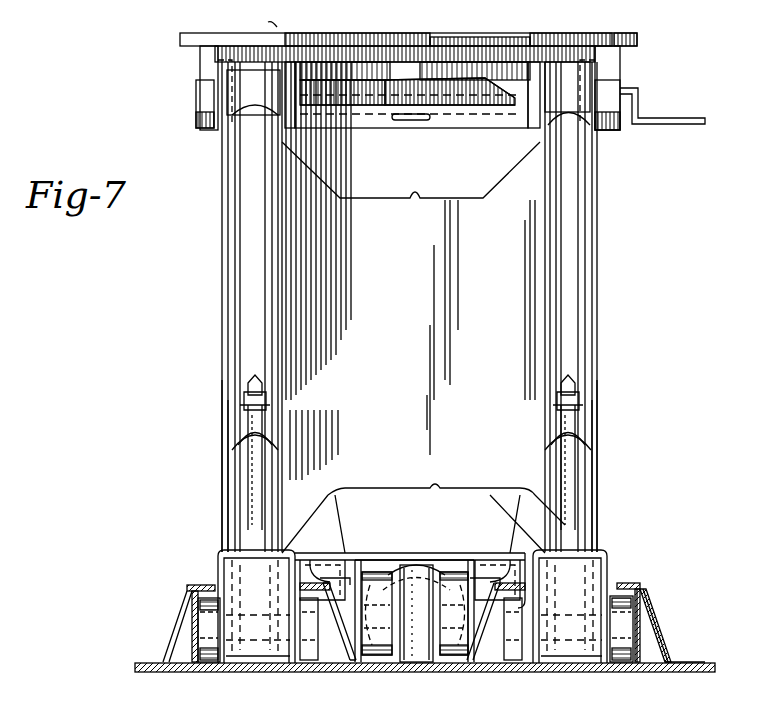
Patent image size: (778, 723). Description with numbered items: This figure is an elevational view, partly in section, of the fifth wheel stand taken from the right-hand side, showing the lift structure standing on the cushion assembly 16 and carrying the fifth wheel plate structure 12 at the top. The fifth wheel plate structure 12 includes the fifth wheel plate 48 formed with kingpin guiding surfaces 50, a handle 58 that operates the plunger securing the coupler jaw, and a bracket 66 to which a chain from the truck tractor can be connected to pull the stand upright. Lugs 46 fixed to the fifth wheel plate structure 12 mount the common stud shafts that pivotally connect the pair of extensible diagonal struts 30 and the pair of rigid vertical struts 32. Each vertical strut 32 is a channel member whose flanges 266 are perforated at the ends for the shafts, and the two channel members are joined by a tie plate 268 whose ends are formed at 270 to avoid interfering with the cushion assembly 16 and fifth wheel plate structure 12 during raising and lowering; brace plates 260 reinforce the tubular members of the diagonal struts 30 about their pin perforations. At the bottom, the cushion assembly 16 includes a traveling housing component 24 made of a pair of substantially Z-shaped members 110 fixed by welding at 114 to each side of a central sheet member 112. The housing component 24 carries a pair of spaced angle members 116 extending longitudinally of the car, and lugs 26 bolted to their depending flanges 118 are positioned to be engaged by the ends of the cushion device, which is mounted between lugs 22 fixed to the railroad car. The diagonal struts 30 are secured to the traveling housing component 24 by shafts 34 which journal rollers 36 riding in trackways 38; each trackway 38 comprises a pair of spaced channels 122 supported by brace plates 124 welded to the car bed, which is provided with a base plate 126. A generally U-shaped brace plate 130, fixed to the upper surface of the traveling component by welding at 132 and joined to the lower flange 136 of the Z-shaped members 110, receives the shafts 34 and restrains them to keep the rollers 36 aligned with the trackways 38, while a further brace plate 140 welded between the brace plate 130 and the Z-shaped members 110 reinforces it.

The fifth wheel plate structure 12 is at (273, 31).
The cushion assembly 16 is at (381, 548).
The lugs 22 is at (425, 574).
The traveling housing component 24 is at (421, 550).
The lugs 26 is at (373, 563).
The diagonal struts 30 is at (264, 324).
The vertical struts 32 is at (216, 477).
The shafts 34 is at (195, 624).
The rollers 36 is at (208, 655).
The trackways 38 is at (241, 675).
The lugs 46 is at (200, 92).
The fifth wheel plate 48 is at (538, 35).
The kingpin guiding surfaces 50 is at (325, 36).
The handle 58 is at (672, 120).
The bracket 66 is at (412, 121).
The Z-shaped members 110 is at (322, 515).
The central sheet member 112 is at (408, 553).
The welding 114 is at (332, 510).
The angle members 116 is at (348, 570).
The depending flanges 118 is at (470, 578).
The channels 122 is at (648, 612).
The brace plates 124 is at (658, 630).
The base plate 126 is at (705, 663).
The brace plate 130 is at (218, 552).
The welding 132 is at (538, 520).
The lower flange 136 is at (584, 702).
The brace plate 140 is at (250, 580).
The brace plates 260 is at (246, 392).
The flanges 266 is at (228, 498).
The tie plate 268 is at (495, 352).
The formed ends 270 is at (410, 200).